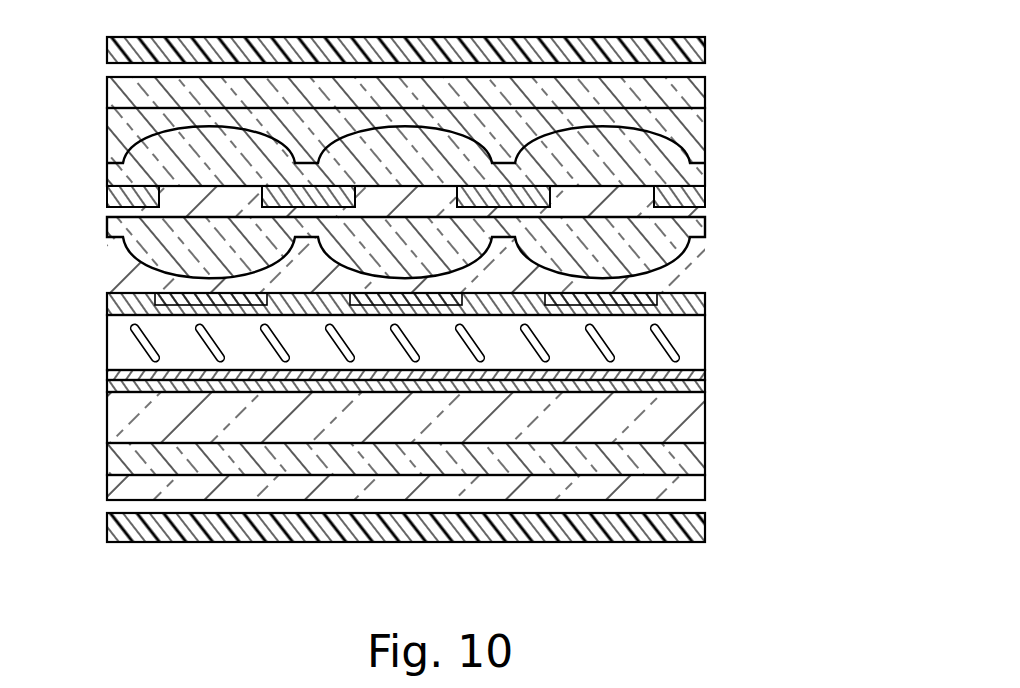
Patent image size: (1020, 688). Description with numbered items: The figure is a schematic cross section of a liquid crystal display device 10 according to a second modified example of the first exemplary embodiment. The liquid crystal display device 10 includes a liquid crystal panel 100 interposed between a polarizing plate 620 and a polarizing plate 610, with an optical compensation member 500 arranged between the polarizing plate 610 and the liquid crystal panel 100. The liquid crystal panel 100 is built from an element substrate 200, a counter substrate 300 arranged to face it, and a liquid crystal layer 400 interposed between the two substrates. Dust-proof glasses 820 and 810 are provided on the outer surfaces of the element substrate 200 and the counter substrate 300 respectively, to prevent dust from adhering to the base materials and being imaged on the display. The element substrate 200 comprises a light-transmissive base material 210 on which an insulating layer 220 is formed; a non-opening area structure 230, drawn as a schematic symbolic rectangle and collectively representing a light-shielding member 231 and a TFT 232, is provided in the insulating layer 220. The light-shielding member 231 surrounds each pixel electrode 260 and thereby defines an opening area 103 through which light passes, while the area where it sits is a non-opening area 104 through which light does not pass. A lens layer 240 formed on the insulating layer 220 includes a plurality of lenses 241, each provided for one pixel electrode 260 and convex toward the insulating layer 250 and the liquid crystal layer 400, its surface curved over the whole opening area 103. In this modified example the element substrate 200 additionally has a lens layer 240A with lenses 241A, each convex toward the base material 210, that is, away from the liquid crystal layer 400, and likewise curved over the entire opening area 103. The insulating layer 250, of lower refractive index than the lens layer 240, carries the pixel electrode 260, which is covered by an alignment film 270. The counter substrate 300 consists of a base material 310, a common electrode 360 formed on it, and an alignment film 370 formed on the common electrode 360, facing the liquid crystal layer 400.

The liquid crystal display device 10 is at (434, 296).
The liquid crystal panel 100 is at (441, 296).
The opening area 103 is at (407, 172).
The non-opening area 104 is at (507, 172).
The element substrate 200 is at (476, 296).
The base material 210 is at (705, 122).
The insulating layer 220 is at (705, 212).
The non-opening area structure 230 is at (441, 380).
The light-shielding member 231 is at (406, 386).
The TFT 232 is at (503, 212).
The lens layer 240 is at (441, 402).
The lens layer 240A is at (449, 88).
The lens 241 is at (348, 264).
The lens 241A is at (358, 133).
The insulating layer 250 is at (705, 268).
The pixel electrode 260 is at (700, 294).
The alignment film 270 is at (705, 312).
The counter substrate 300 is at (476, 404).
The base material 310 is at (705, 420).
The common electrode 360 is at (705, 388).
The alignment film 370 is at (705, 375).
The liquid crystal layer 400 is at (694, 347).
The optical compensation member 500 is at (705, 490).
The polarizing plate 610 is at (705, 527).
The polarizing plate 620 is at (705, 50).
The dust-proof glass 810 is at (705, 455).
The dust-proof glass 820 is at (705, 85).